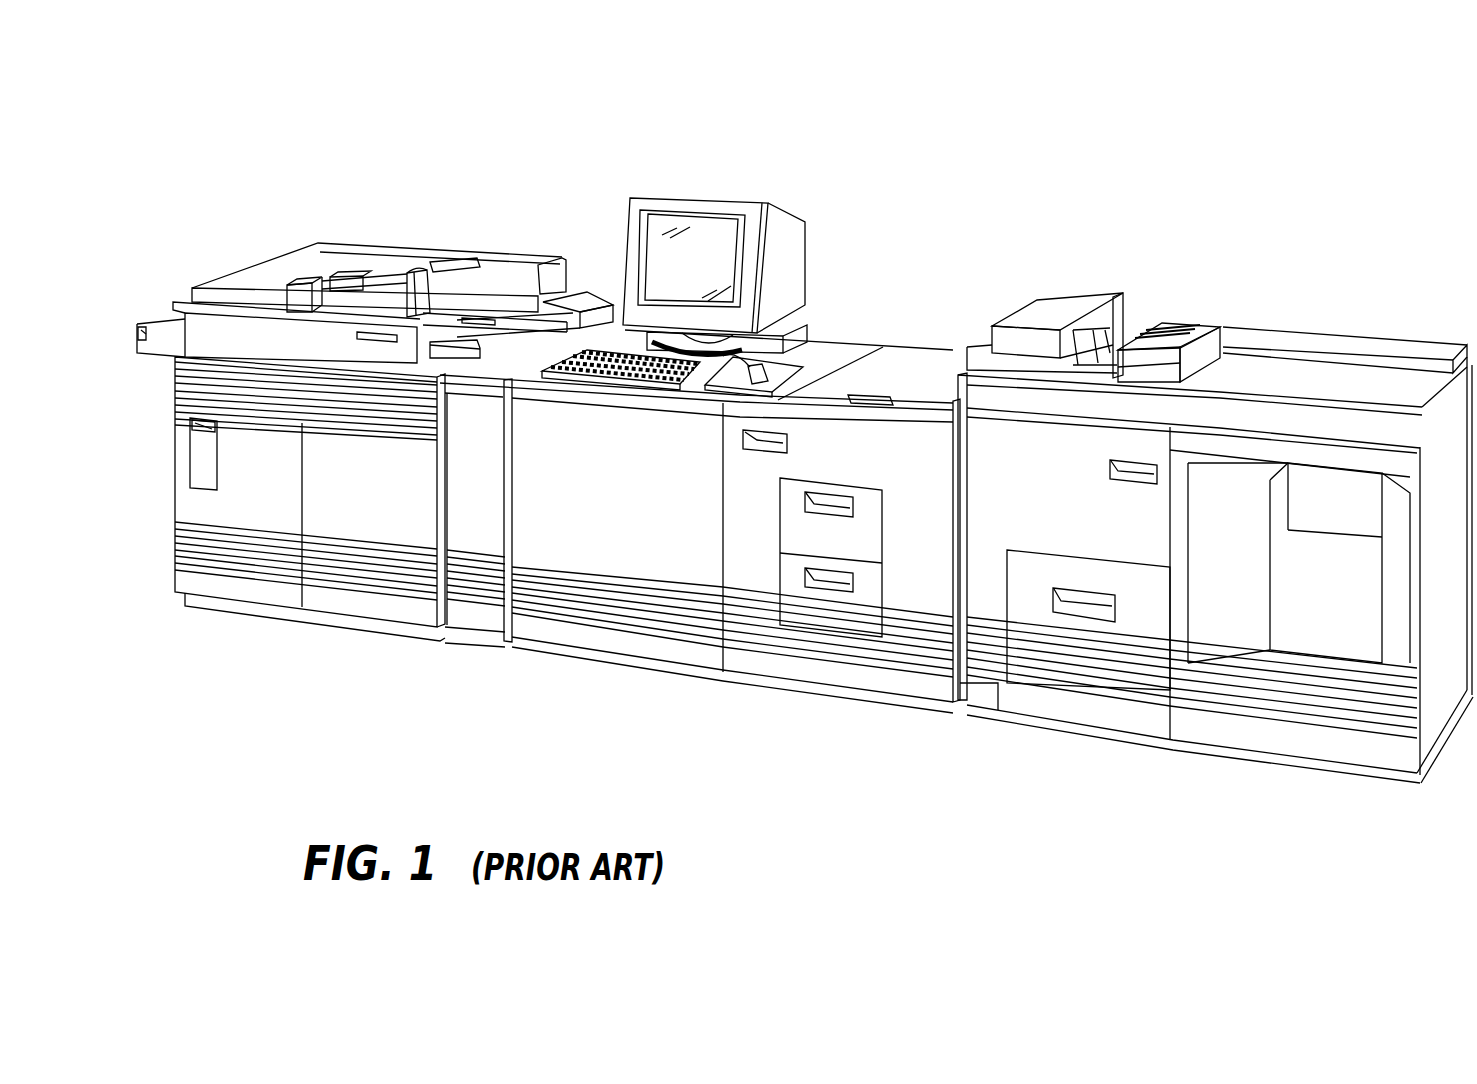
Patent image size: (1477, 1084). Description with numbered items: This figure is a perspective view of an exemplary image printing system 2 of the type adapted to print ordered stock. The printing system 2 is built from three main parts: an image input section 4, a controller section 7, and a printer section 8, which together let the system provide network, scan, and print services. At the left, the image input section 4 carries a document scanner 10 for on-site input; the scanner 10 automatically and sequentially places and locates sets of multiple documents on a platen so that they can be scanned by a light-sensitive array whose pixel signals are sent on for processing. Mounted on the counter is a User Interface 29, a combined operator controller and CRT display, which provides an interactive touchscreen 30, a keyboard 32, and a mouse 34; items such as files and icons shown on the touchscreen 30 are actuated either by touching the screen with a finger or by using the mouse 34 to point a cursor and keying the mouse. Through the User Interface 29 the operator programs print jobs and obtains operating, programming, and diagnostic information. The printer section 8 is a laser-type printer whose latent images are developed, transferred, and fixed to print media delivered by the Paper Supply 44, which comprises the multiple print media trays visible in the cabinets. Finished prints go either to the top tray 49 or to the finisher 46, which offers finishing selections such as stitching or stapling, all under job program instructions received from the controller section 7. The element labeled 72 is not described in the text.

The image printing system 2 is at (805, 426).
The image input section 4 is at (375, 263).
The controller section 7 is at (166, 501).
The printer section 8 is at (956, 509).
The document scanner 10 is at (290, 277).
The User Interface 29 is at (695, 240).
The interactive touchscreen 30 is at (660, 272).
The keyboard 32 is at (613, 385).
The mouse 34 is at (719, 389).
The Paper Supply 44 is at (1036, 597).
The Finisher 46 is at (1257, 737).
The top tray 49 is at (1163, 310).
The work surface 72 is at (557, 385).